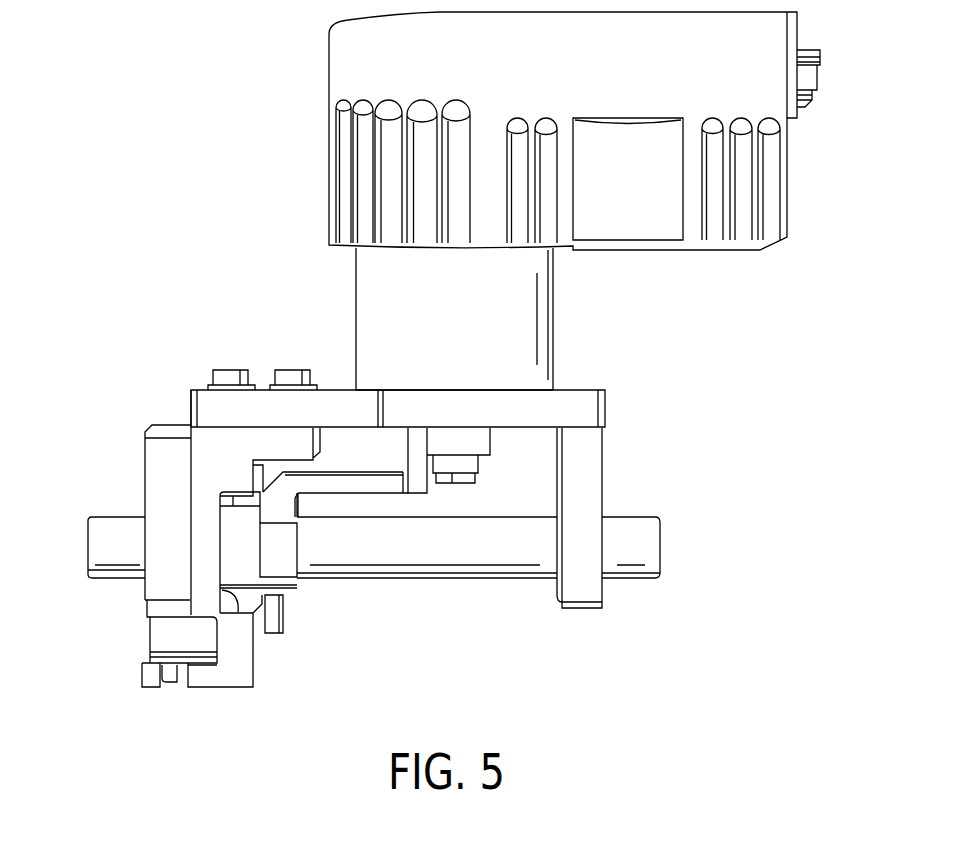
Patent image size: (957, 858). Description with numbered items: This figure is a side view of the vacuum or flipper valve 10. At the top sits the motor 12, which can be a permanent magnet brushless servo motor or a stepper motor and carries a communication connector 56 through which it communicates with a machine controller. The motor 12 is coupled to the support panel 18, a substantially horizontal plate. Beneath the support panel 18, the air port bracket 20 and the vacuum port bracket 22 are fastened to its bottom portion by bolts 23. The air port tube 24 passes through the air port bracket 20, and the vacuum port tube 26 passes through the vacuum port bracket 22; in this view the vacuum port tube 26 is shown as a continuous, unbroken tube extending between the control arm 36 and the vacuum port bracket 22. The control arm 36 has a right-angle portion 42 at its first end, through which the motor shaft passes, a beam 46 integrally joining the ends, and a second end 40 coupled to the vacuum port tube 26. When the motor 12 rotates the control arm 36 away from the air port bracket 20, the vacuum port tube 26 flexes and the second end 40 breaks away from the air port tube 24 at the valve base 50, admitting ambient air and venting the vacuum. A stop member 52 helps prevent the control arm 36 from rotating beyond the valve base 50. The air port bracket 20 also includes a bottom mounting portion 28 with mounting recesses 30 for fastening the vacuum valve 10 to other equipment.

The vacuum valve 10 is at (213, 278).
The motor 12 is at (357, 47).
The support panel 18 is at (605, 410).
The air port bracket 20 is at (145, 455).
The vacuum port bracket 22 is at (588, 477).
The bolts 23 is at (292, 368).
The air port tube 24 is at (105, 580).
The vacuum port tube 26 is at (455, 553).
The bottom mounting portion 28 is at (212, 678).
The mounting recesses 30 is at (175, 680).
The control arm 36 is at (481, 443).
The second end 40 is at (290, 584).
The right-angle portion 42 is at (430, 437).
The beam 46 is at (358, 483).
The valve base 50 is at (205, 520).
The stop member 52 is at (285, 627).
The communication connector 56 is at (814, 75).